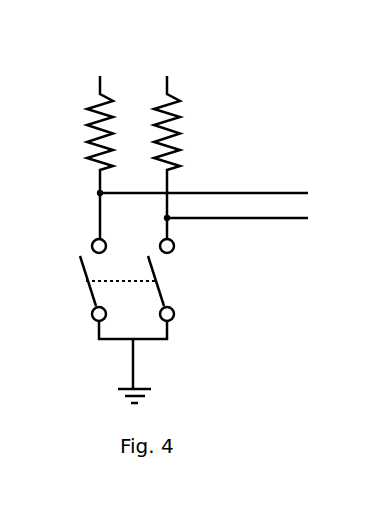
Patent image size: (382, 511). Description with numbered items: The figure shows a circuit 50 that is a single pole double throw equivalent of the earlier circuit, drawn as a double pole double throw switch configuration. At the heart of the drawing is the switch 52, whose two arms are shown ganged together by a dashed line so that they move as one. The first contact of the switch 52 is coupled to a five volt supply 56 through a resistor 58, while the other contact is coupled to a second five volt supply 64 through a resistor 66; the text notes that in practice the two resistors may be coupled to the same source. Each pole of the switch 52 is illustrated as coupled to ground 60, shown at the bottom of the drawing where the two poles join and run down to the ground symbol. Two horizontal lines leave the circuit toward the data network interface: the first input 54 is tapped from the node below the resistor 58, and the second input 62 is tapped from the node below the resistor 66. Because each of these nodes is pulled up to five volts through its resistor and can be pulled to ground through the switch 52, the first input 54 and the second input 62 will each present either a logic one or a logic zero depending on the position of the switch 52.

The circuit 50 is at (312, 96).
The switch 52 is at (90, 238).
The input 1 54 is at (288, 192).
The +5 V 56 is at (100, 45).
The resistor 58 is at (85, 120).
The ground 60 is at (120, 387).
The input 2 62 is at (288, 218).
The +5 V 64 is at (168, 50).
The resistor 66 is at (177, 118).